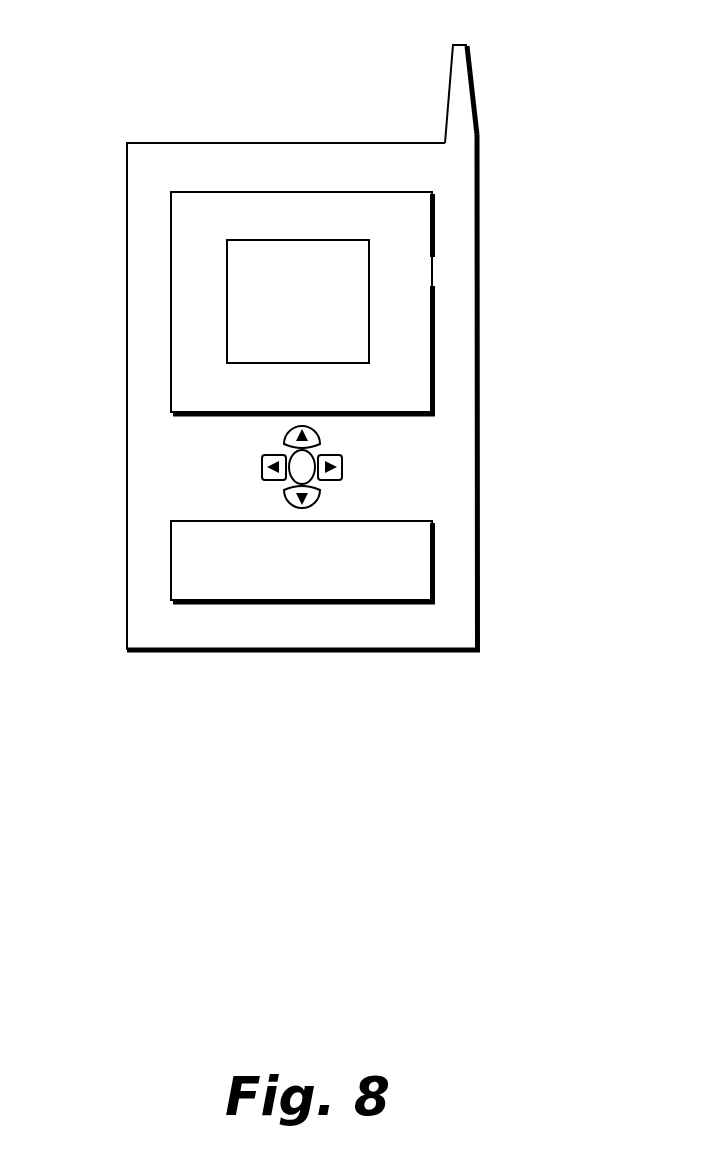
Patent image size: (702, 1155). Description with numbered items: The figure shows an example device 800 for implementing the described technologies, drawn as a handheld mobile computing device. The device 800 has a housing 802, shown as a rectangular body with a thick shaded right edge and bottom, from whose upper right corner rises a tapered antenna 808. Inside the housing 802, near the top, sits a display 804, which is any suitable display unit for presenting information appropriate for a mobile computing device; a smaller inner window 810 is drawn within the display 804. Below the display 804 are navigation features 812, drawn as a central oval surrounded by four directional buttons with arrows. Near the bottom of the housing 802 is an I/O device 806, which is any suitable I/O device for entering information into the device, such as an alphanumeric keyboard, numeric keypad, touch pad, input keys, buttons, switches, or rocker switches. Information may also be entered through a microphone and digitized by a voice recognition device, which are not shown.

The device 800 is at (141, 66).
The housing 802 is at (484, 399).
The display 804 is at (443, 213).
The I/O device 806 is at (444, 557).
The antenna 808 is at (440, 84).
The display window 810 is at (381, 318).
The navigation features 812 is at (352, 467).